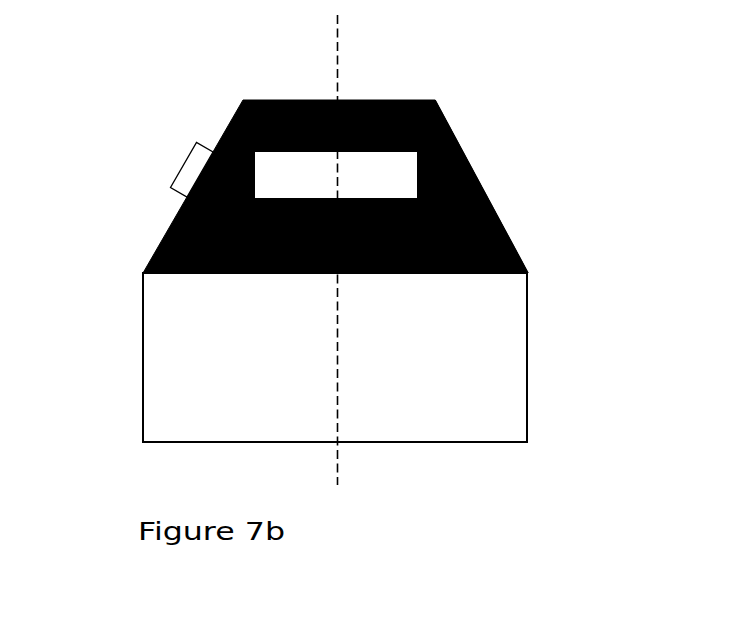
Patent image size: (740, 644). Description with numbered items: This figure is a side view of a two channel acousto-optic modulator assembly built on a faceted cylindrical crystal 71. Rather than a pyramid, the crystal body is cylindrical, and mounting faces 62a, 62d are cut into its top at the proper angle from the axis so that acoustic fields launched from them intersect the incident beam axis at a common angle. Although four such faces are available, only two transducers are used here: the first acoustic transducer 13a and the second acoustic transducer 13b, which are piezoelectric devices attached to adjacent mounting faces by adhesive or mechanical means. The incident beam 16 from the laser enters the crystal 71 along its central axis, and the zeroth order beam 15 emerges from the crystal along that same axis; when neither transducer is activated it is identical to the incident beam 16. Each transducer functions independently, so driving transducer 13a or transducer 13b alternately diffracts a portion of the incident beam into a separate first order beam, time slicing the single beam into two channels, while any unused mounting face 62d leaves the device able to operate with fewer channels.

The first acoustic transducer 13a is at (307, 166).
The second acoustic transducer 13b is at (185, 175).
The zeroth order beam 15 is at (347, 45).
The incident beam 16 is at (349, 463).
The mounting face 62a is at (223, 132).
The mounting face 62d is at (502, 220).
The faceted cylindrical crystal 71 is at (135, 336).